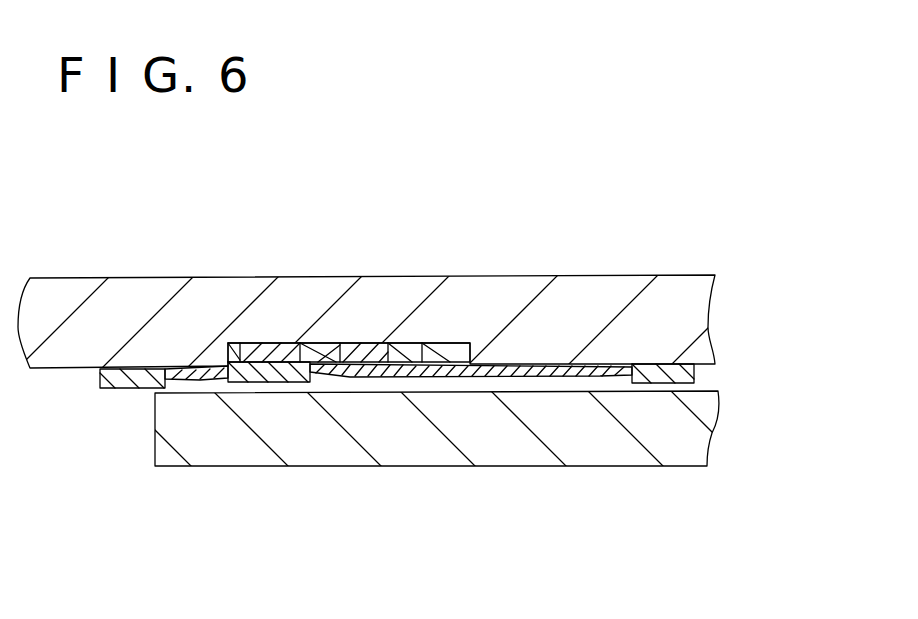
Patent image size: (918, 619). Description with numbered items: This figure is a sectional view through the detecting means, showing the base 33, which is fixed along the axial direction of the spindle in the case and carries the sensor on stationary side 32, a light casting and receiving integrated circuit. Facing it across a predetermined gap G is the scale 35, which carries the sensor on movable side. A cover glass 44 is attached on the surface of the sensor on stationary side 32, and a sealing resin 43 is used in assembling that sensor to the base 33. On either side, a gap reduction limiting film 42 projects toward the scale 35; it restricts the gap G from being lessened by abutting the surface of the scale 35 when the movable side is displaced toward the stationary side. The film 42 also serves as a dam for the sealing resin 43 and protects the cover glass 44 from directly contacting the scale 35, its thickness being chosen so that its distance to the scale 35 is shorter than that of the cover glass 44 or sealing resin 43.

The sensor on stationary side 32 is at (274, 344).
The base 33 is at (683, 285).
The scale 35 is at (512, 458).
The gap reduction limiting film 42 is at (122, 383).
The sealing resin 43 is at (543, 366).
The cover glass 44 is at (273, 372).
The gap G is at (717, 376).